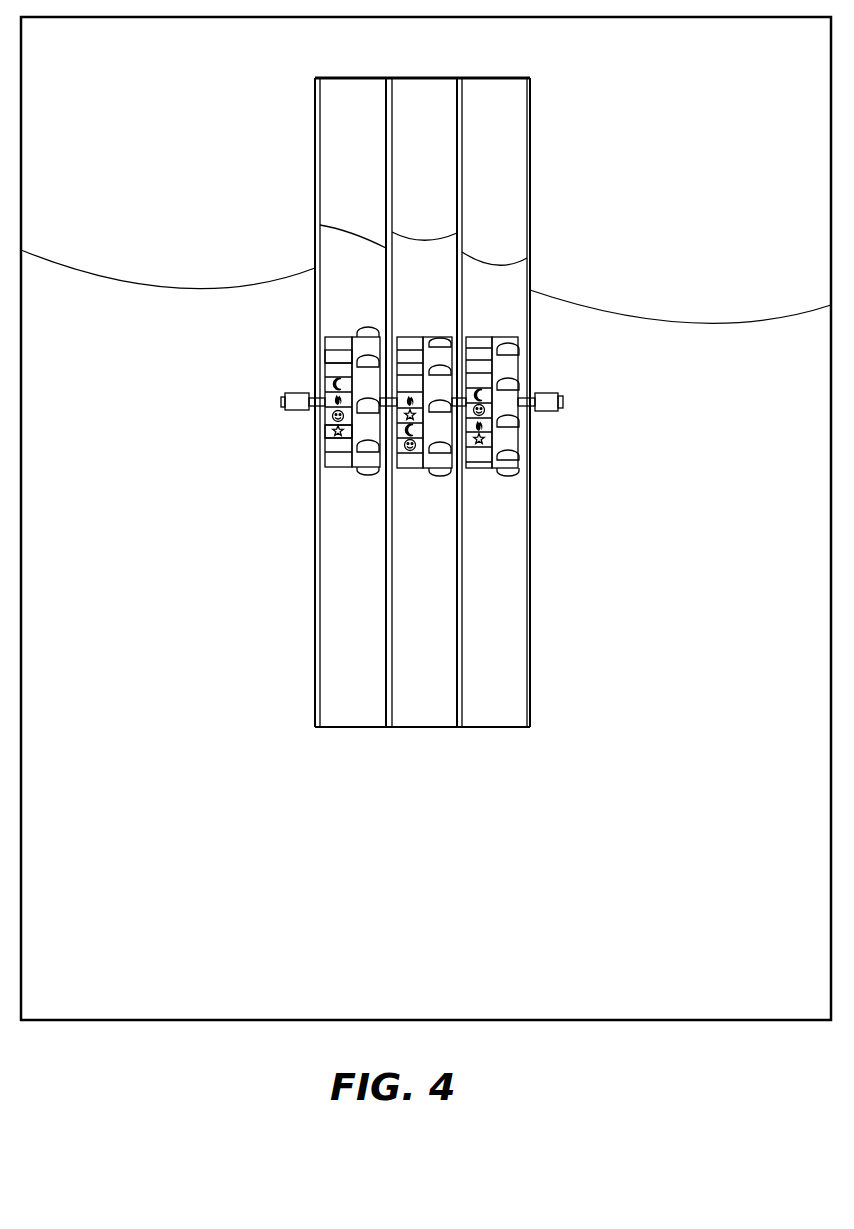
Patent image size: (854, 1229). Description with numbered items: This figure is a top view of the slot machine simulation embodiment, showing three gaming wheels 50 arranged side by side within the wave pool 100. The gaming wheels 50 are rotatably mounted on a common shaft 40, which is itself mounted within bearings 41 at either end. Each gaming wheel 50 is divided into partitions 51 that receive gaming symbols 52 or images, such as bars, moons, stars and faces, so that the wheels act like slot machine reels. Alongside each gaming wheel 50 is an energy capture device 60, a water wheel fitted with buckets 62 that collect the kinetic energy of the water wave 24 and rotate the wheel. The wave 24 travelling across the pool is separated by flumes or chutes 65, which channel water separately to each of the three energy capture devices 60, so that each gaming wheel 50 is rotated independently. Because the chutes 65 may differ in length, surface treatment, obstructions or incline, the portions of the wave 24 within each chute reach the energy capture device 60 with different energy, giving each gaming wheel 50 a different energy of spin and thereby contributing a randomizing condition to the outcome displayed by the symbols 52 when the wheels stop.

The wave pool 100 is at (138, 68).
The chutes 65 is at (357, 91).
The wave 24 is at (112, 275).
The gaming wheel 50 is at (425, 411).
The partitions 51 is at (328, 354).
The gaming symbols 52 is at (331, 441).
The energy capture device 60 is at (517, 370).
The buckets 62 is at (364, 470).
The shaft 40 is at (285, 400).
The bearings 41 is at (292, 410).